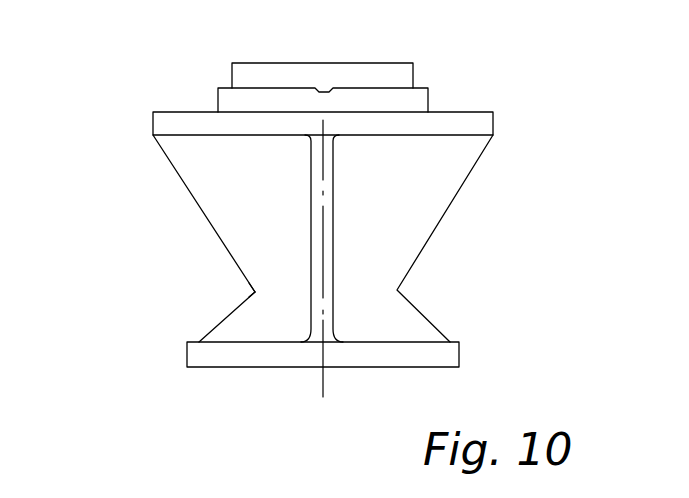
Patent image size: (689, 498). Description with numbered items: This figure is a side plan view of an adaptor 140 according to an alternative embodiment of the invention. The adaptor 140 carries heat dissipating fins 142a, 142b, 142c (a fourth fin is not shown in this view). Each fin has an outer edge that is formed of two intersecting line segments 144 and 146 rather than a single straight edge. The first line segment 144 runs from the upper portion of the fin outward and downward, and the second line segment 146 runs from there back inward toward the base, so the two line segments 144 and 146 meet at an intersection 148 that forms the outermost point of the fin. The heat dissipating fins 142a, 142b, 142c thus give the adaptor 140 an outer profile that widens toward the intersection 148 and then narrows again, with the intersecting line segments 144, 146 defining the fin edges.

The adaptor 140 is at (138, 87).
The heat dissipating fin 142a is at (190, 160).
The heat dissipating fin 142b is at (333, 158).
The heat dissipating fin 142c is at (426, 205).
The line segment 144 is at (203, 212).
The line segment 146 is at (222, 318).
The intersection 148 is at (255, 292).